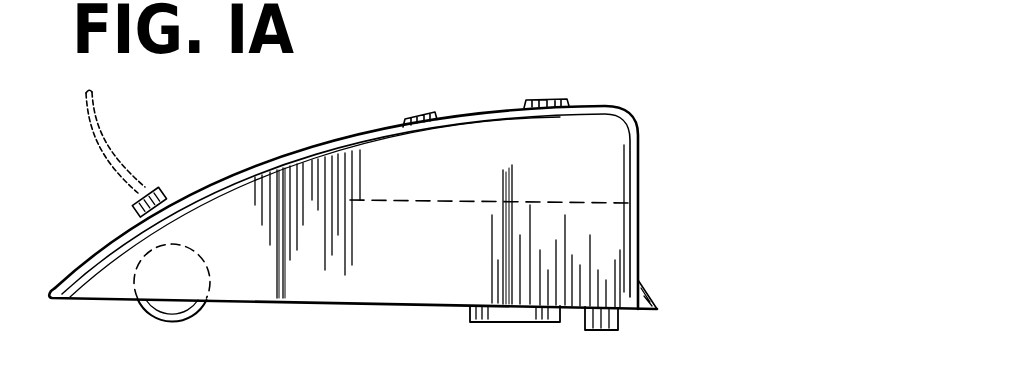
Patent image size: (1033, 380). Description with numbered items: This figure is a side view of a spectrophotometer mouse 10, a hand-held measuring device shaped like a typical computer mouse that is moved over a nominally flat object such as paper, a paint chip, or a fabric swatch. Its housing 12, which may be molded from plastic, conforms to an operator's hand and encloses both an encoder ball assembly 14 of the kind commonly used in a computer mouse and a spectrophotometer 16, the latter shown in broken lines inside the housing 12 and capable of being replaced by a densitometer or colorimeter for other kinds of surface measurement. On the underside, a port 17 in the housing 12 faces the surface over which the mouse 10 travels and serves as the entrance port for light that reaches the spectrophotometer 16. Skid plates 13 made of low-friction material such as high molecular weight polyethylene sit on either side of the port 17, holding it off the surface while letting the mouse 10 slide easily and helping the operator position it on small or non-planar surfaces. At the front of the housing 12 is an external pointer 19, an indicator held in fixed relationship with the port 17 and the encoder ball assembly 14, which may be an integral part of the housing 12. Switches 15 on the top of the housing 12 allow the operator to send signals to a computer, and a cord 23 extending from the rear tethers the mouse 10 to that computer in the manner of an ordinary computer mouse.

The spectrophotometer mouse 10 is at (328, 124).
The housing 12 is at (248, 166).
The skid plates 13 is at (600, 330).
The encoder ball assembly 14 is at (195, 310).
The switches 15 is at (467, 108).
The spectrophotometer 16 is at (552, 206).
The port 17 is at (468, 324).
The external pointer 19 is at (645, 295).
The cord 23 is at (100, 155).